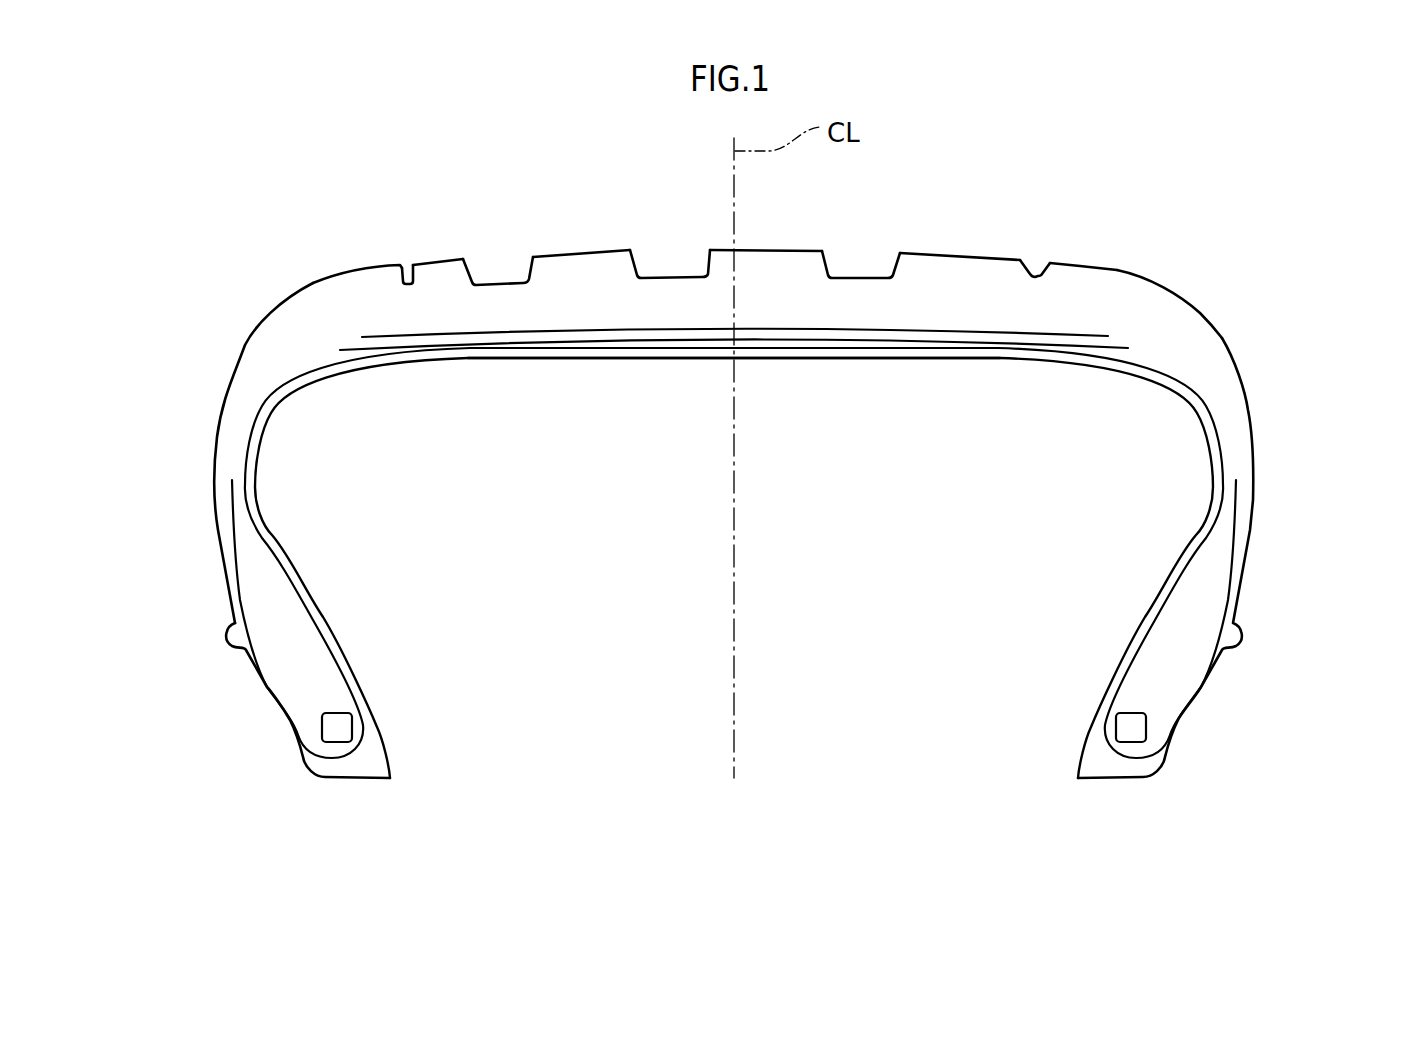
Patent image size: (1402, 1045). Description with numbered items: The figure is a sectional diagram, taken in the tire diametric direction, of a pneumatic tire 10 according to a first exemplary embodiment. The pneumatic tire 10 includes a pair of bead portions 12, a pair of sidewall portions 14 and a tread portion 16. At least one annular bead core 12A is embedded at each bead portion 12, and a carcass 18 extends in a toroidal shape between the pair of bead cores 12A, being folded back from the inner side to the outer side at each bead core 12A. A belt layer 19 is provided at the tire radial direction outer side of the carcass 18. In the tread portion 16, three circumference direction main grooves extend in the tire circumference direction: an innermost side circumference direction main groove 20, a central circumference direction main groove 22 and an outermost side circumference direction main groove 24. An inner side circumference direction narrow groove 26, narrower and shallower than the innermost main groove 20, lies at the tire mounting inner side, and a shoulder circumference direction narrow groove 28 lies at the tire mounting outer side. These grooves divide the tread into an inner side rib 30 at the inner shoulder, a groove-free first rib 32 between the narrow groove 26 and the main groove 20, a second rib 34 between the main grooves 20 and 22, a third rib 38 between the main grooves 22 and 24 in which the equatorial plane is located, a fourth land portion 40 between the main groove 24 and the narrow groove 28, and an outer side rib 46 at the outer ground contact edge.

The pneumatic tire 10 is at (1288, 160).
The bead portion 12 is at (383, 720).
The bead core 12A is at (322, 727).
The sidewall portion 14 is at (216, 520).
The tread portion 16 is at (1118, 268).
The carcass 18 is at (247, 443).
The belt layer 19 is at (368, 337).
The innermost side circumference direction main groove 20 is at (528, 270).
The central circumference direction main groove 22 is at (705, 267).
The outermost side circumference direction main groove 24 is at (897, 263).
The inner side circumference direction narrow groove 26 is at (408, 267).
The shoulder circumference direction narrow groove 28 is at (1042, 267).
The inner side rib 30 is at (377, 263).
The first rib 32 is at (437, 258).
The second rib 34 is at (570, 250).
The third rib 38 is at (775, 248).
The fourth land portion 40 is at (953, 252).
The outer side rib 46 is at (1073, 263).